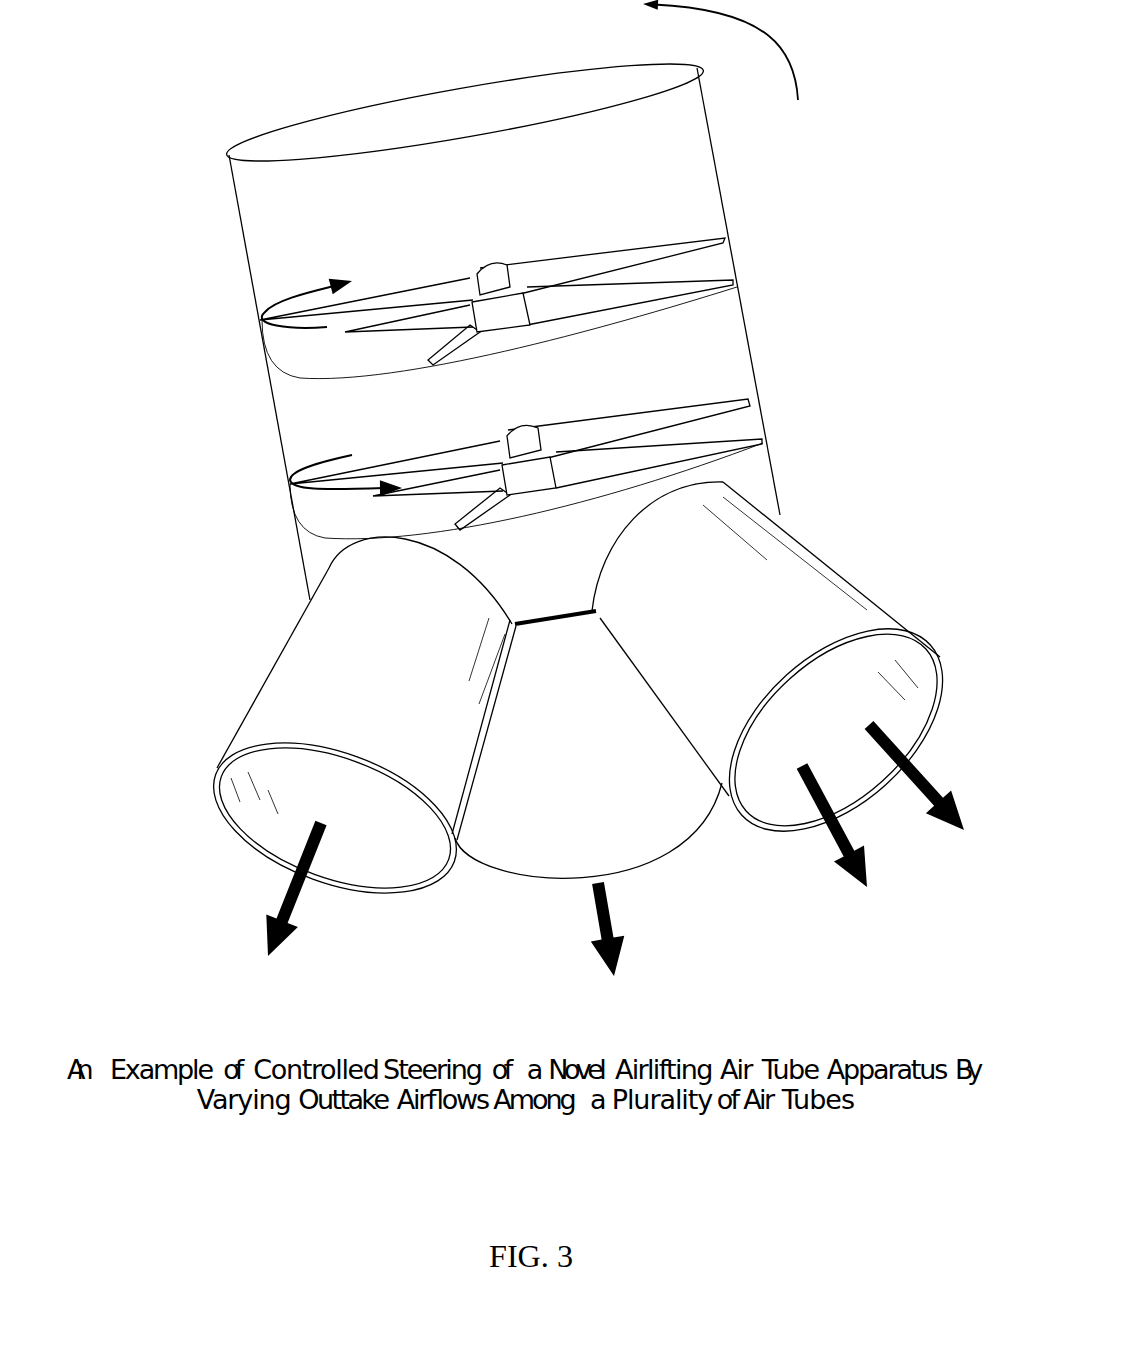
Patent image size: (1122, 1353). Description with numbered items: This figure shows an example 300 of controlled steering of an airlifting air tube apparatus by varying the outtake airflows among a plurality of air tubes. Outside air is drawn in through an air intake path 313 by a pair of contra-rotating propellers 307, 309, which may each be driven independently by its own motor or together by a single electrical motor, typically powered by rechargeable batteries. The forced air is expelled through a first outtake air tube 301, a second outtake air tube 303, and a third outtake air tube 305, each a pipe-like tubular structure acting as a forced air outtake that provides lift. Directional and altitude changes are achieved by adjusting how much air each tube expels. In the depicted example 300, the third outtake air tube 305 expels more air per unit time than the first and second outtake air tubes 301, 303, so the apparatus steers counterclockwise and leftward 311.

The example of controlled steering 300 is at (540, 1203).
The first outtake air tube 301 is at (310, 689).
The second outtake air tube 303 is at (588, 793).
The third outtake air tube 305 is at (807, 606).
The propeller 307 is at (496, 469).
The propeller 309 is at (468, 308).
The counterclockwise and leftward steering 311 is at (732, 72).
The air intake path 313 is at (219, 214).